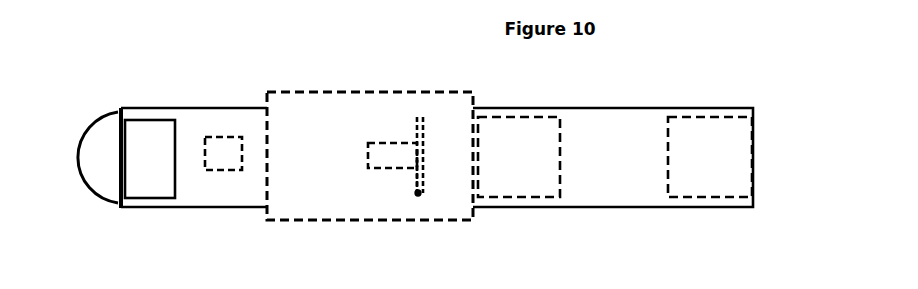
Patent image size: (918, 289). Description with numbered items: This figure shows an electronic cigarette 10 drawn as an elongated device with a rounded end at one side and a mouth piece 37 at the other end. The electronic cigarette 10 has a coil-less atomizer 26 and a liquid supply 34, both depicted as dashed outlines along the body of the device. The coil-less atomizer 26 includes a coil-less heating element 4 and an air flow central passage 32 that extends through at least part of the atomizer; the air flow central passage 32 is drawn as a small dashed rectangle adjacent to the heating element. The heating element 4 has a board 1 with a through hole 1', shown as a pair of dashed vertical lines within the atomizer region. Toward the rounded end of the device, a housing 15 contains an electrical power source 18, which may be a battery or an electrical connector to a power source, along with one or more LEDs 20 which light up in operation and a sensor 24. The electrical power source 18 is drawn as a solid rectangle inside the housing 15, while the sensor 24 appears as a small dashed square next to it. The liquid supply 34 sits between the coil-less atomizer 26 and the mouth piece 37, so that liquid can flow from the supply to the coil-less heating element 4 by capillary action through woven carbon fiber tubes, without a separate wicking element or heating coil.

The electronic cigarette 10 is at (647, 117).
The housing 15 is at (238, 208).
The electrical power source 18 is at (157, 170).
The LED 20 is at (112, 118).
The sensor 24 is at (215, 143).
The coil-less atomizer 26 is at (447, 102).
The air flow central passage 32 is at (388, 148).
The through hole 1' is at (441, 155).
The board 1 is at (397, 199).
The coil-less heating element 4 is at (418, 193).
The liquid supply 34 is at (530, 170).
The mouth piece 37 is at (712, 172).